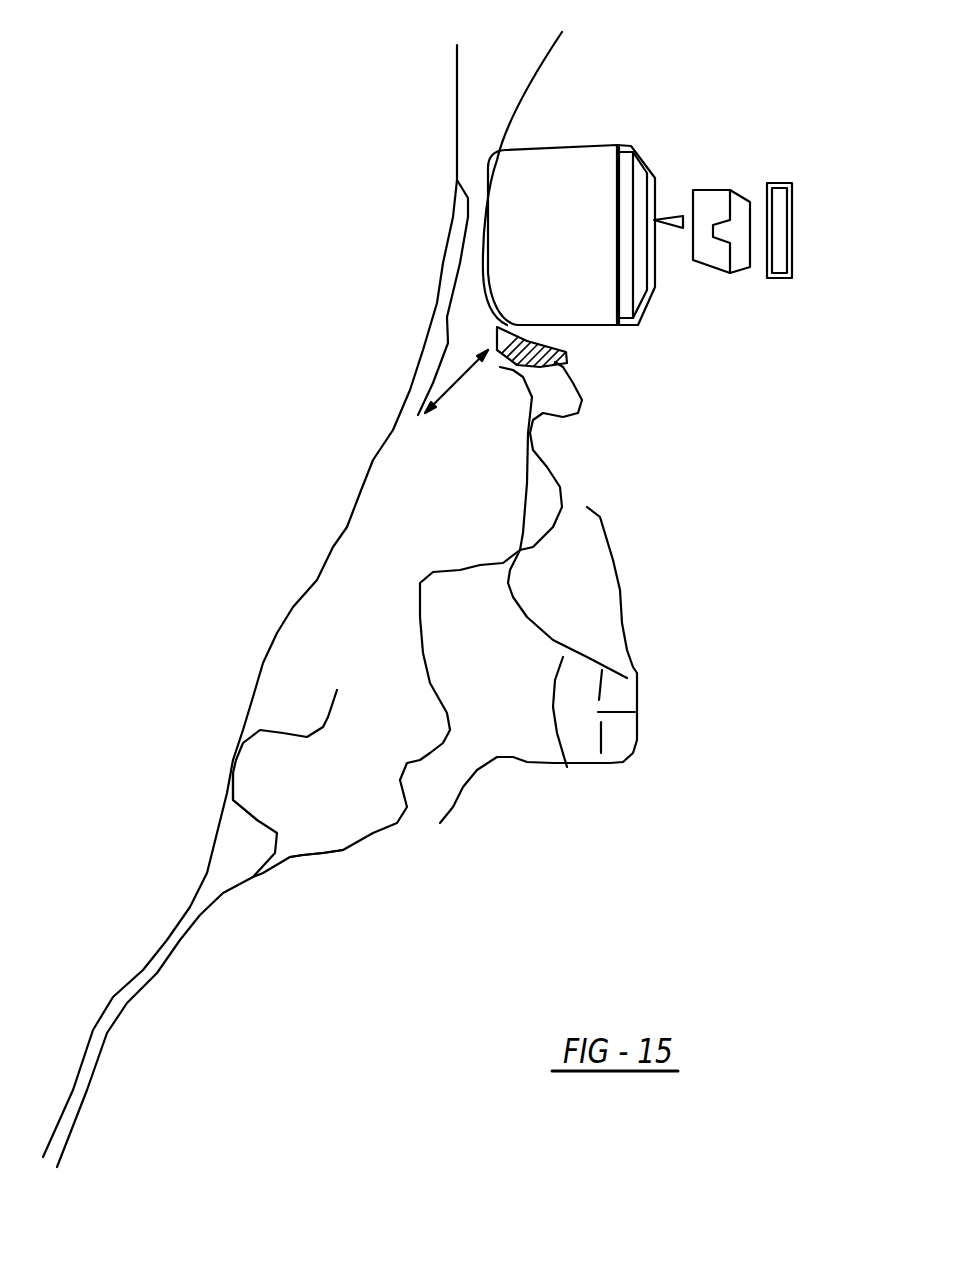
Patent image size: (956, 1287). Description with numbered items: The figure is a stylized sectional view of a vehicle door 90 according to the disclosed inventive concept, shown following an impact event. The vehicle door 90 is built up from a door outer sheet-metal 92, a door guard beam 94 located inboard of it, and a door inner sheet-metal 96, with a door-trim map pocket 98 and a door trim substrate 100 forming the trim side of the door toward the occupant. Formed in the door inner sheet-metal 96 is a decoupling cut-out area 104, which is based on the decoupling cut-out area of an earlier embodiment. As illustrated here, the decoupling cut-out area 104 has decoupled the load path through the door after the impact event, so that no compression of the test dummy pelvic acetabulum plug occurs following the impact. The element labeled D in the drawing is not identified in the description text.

The airbag module housing D is at (592, 148).
The vehicle door 90 is at (265, 593).
The door outer sheet-metal 92 is at (255, 685).
The door guard beam 94 is at (255, 820).
The door inner sheet-metal 96 is at (313, 857).
The door-trim map pocket 98 is at (567, 767).
The door trim substrate 100 is at (612, 765).
The decoupling cut-out area 104 is at (538, 352).